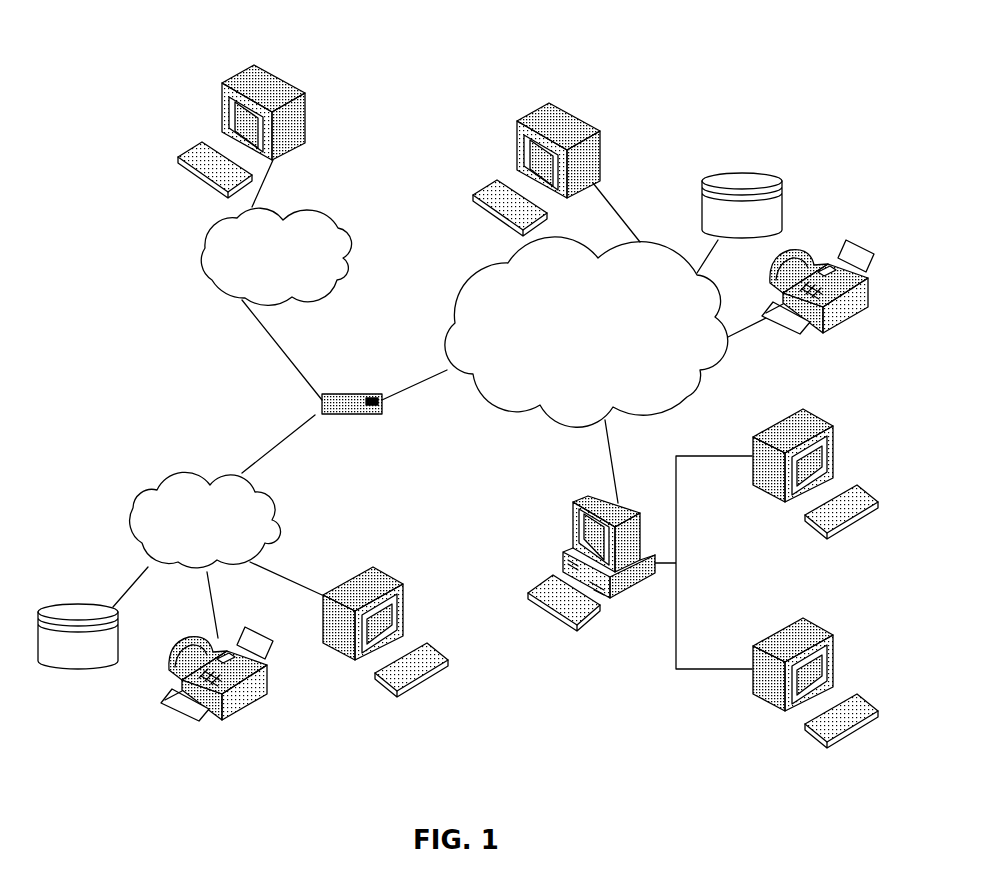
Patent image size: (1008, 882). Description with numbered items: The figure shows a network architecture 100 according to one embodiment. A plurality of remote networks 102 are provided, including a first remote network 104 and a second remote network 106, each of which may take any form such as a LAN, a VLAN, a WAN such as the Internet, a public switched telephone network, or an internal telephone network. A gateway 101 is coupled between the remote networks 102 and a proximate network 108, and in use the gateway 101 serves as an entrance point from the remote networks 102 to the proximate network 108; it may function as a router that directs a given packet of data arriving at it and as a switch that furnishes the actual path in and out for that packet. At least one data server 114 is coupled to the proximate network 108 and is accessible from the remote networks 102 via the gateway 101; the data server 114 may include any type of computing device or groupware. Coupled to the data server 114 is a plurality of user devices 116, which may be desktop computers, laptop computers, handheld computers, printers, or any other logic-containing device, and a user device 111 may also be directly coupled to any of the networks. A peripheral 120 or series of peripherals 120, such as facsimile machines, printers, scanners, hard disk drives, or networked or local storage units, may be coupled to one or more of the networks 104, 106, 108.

The network architecture 100 is at (152, 46).
The gateway 101 is at (338, 394).
The remote networks 102 is at (182, 314).
The first remote network 104 is at (134, 495).
The second remote network 106 is at (343, 228).
The proximate network 108 is at (690, 399).
The user device 111 is at (600, 134).
The data server 114 is at (572, 527).
The user devices 116 is at (306, 102).
The peripheral 120 is at (780, 183).